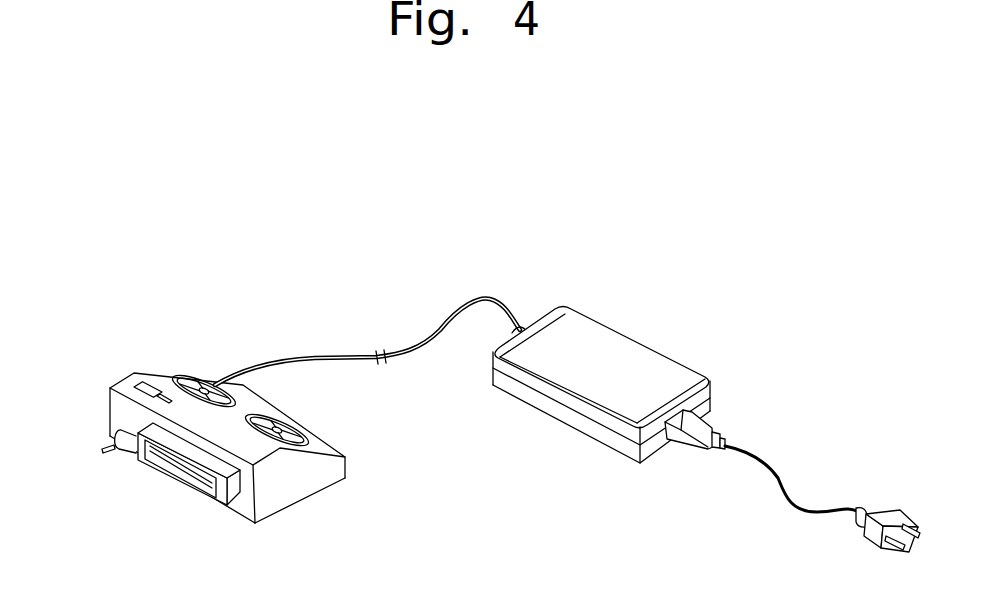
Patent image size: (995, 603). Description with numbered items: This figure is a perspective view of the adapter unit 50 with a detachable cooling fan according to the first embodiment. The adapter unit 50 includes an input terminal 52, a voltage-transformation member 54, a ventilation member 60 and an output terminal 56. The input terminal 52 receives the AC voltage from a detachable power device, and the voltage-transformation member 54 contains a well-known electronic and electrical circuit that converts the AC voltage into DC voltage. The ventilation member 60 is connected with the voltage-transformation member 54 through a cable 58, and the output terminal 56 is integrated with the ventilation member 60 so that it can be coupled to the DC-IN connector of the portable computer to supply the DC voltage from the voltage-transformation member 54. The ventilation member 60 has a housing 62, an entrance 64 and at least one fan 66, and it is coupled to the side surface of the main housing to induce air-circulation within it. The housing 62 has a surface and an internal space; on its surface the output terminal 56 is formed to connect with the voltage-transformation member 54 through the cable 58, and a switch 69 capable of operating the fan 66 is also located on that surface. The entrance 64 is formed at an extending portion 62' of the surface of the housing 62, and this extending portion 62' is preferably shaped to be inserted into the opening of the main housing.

The adapter unit 50 is at (319, 149).
The input terminal 52 is at (690, 415).
The voltage-transformation member 54 is at (615, 341).
The output terminal 56 is at (108, 449).
The cable 58 is at (450, 319).
The ventilation member 60 is at (121, 369).
The housing 62 is at (247, 474).
The extending portion 62' is at (224, 523).
The entrance 64 is at (178, 467).
The fan 66 is at (245, 387).
The switch 69 is at (141, 386).